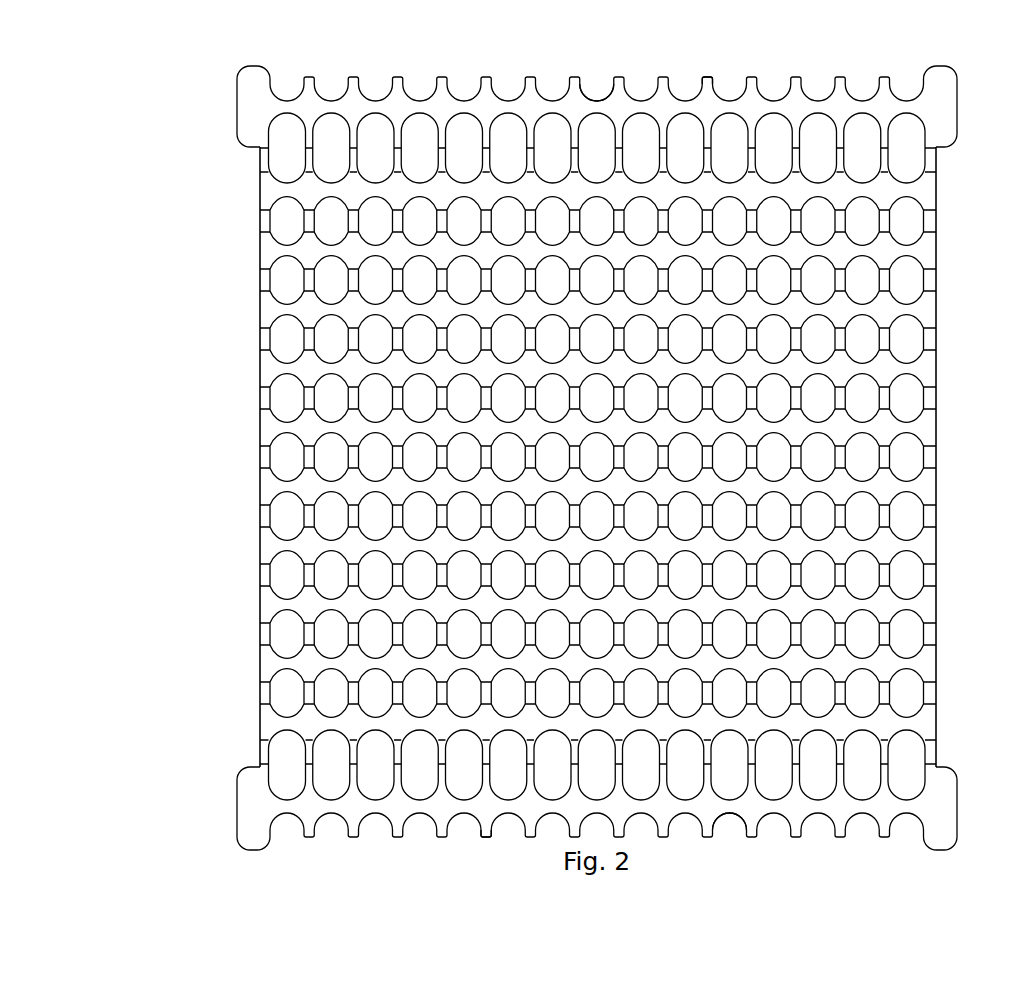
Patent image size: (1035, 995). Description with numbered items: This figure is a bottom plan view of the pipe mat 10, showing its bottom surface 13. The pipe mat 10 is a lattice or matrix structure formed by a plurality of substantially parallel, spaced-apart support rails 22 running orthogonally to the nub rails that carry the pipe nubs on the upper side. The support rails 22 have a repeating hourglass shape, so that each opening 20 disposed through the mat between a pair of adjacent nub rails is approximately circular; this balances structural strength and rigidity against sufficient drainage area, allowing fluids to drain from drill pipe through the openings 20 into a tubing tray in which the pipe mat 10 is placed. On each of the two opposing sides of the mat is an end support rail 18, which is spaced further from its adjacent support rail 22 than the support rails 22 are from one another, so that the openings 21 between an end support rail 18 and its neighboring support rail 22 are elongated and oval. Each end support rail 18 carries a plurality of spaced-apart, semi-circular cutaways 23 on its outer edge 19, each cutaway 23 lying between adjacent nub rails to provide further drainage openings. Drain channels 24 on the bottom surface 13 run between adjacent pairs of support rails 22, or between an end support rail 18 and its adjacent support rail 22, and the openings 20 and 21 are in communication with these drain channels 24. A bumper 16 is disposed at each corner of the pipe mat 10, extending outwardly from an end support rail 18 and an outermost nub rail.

The pipe mat 10 is at (82, 282).
The bottom surface 13 is at (880, 367).
The bumper 16 is at (248, 88).
The end support rail 18 is at (390, 102).
The outer edge 19 is at (705, 60).
The opening 20 is at (900, 283).
The opening 21 is at (283, 148).
The support rail 22 is at (265, 250).
The cutaway 23 is at (596, 82).
The drain channel 24 is at (927, 216).